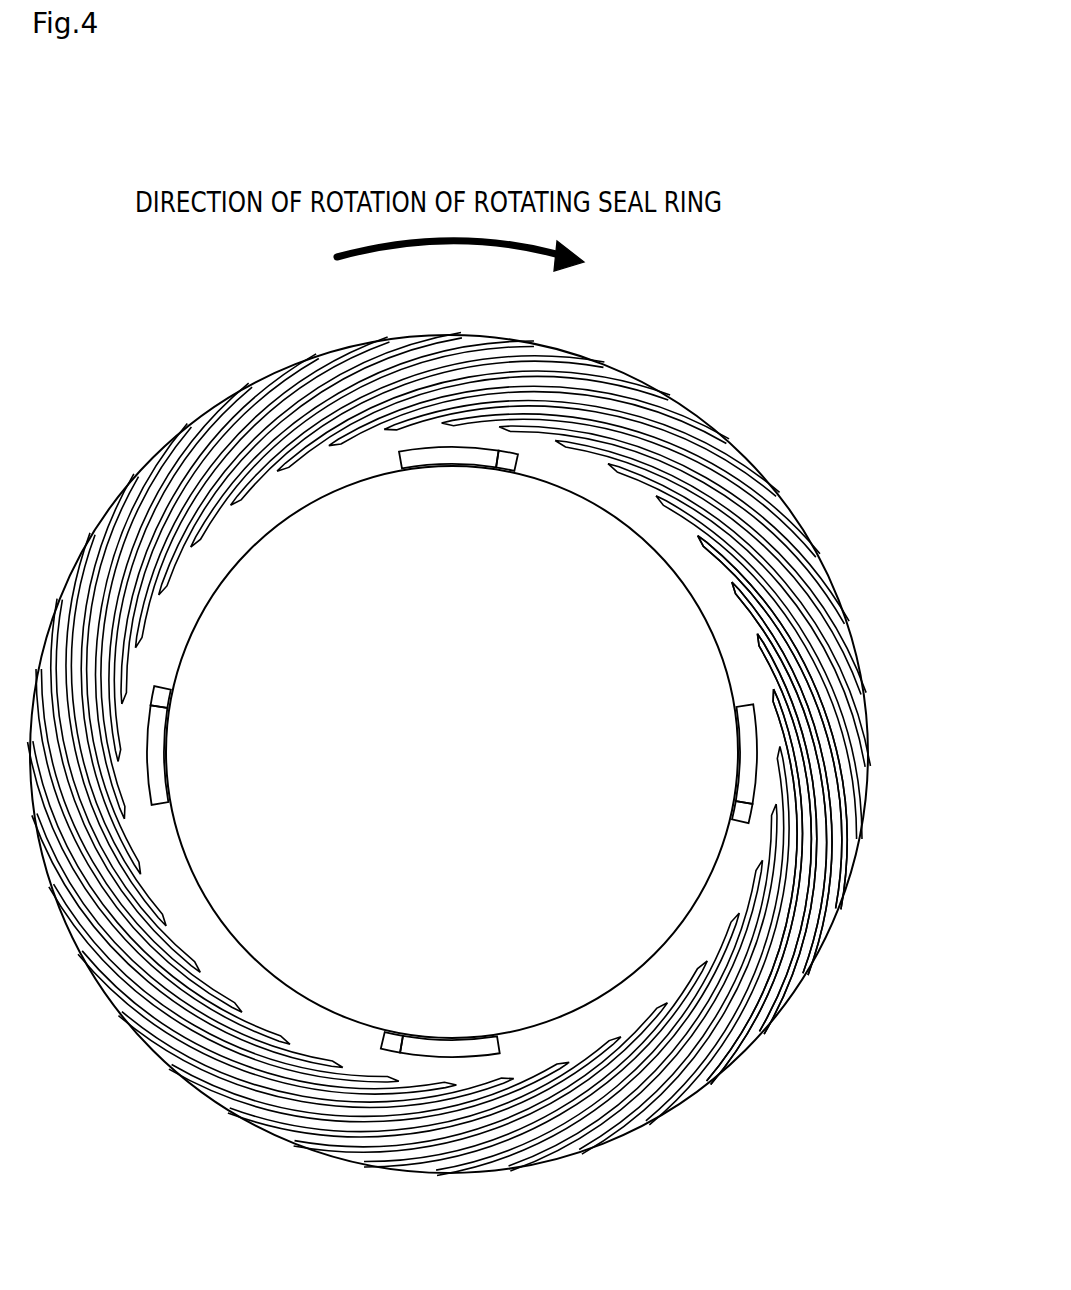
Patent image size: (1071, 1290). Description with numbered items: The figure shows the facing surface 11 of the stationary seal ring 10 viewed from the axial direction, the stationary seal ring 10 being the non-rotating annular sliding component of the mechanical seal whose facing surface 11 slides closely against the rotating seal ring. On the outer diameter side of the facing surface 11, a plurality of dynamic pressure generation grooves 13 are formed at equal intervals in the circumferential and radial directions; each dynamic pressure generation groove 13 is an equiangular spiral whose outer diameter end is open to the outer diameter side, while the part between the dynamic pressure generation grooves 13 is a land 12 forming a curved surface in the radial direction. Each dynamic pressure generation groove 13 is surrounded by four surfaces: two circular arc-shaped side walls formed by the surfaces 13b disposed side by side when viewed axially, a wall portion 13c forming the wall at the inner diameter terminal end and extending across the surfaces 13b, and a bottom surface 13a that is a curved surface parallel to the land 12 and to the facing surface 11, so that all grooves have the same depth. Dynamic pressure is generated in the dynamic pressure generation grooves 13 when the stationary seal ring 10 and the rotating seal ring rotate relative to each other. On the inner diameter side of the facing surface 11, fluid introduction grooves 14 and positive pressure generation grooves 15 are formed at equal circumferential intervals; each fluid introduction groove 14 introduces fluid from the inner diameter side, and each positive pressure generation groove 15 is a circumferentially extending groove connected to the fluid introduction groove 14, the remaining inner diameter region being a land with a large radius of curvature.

The stationary seal ring 10 is at (762, 470).
The facing surface 11 is at (782, 522).
The land 12 is at (723, 452).
The dynamic pressure generation groove 13 is at (832, 614).
The bottom surface 13a is at (815, 772).
The surface 13b is at (790, 706).
The wall portion 13c is at (780, 668).
The fluid introduction groove 14 is at (497, 464).
The positive pressure generation groove 15 is at (450, 456).